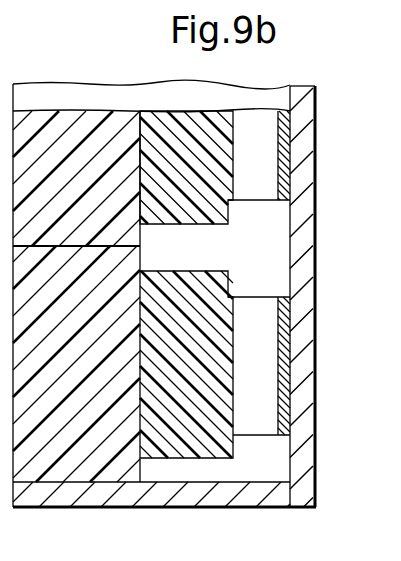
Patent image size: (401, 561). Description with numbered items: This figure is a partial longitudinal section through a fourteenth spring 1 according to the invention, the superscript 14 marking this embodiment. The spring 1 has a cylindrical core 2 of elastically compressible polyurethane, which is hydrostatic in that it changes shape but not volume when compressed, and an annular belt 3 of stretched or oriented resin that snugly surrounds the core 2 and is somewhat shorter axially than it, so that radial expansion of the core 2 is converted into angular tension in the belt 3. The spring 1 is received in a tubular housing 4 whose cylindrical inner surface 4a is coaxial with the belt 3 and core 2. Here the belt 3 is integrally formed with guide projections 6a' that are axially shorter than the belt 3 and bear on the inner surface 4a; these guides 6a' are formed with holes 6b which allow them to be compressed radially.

The spring 1 is at (150, 480).
The fourteenth spring variant (superscript index) 14 is at (150, 83).
The core 2 is at (88, 450).
The belt 3 is at (205, 437).
The tubular housing 4 is at (300, 333).
The cylindrical inner surface 4a is at (291, 231).
The holes 6b is at (255, 143).
The guide projections 6a' is at (308, 275).